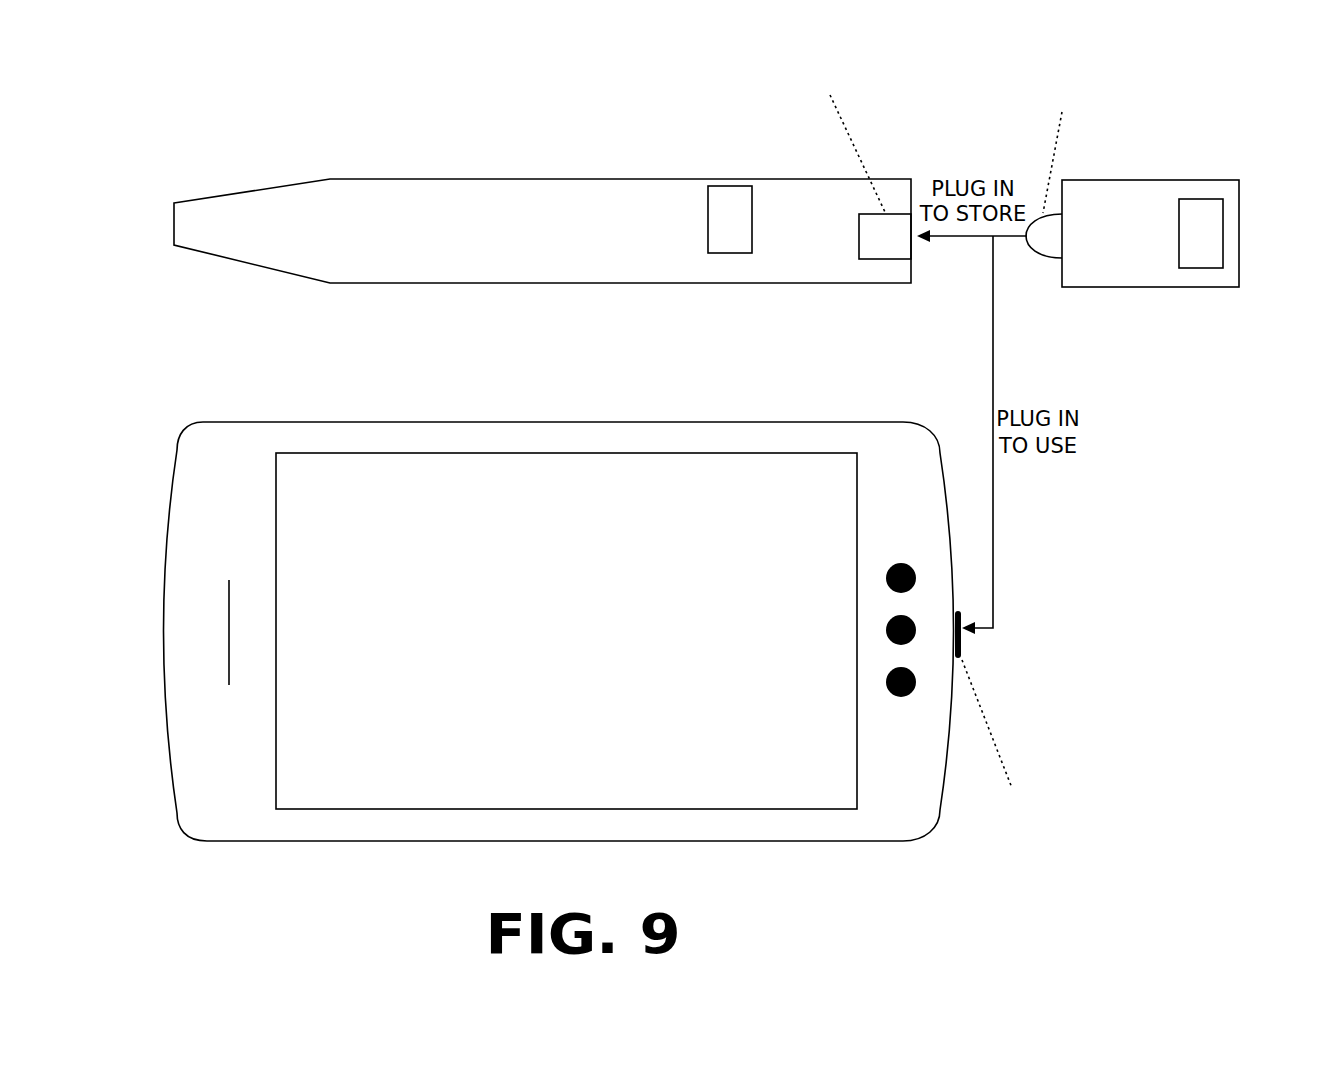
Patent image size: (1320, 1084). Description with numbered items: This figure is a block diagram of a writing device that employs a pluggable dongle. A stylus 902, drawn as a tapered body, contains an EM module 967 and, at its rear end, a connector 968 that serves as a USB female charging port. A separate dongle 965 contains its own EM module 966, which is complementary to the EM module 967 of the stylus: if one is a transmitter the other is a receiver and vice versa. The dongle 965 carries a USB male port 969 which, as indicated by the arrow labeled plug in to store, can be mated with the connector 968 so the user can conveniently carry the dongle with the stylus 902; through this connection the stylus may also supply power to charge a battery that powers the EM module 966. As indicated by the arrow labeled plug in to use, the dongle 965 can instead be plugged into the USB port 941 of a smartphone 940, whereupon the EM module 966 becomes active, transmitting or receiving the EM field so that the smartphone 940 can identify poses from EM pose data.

The stylus 902 is at (440, 177).
The EM module 967 is at (736, 184).
The connector 968 is at (898, 212).
The dongle 965 is at (1158, 178).
The EM module 966 is at (1207, 198).
The USB male port 969 is at (1030, 213).
The smartphone 940 is at (923, 422).
The USB port 941 is at (963, 656).